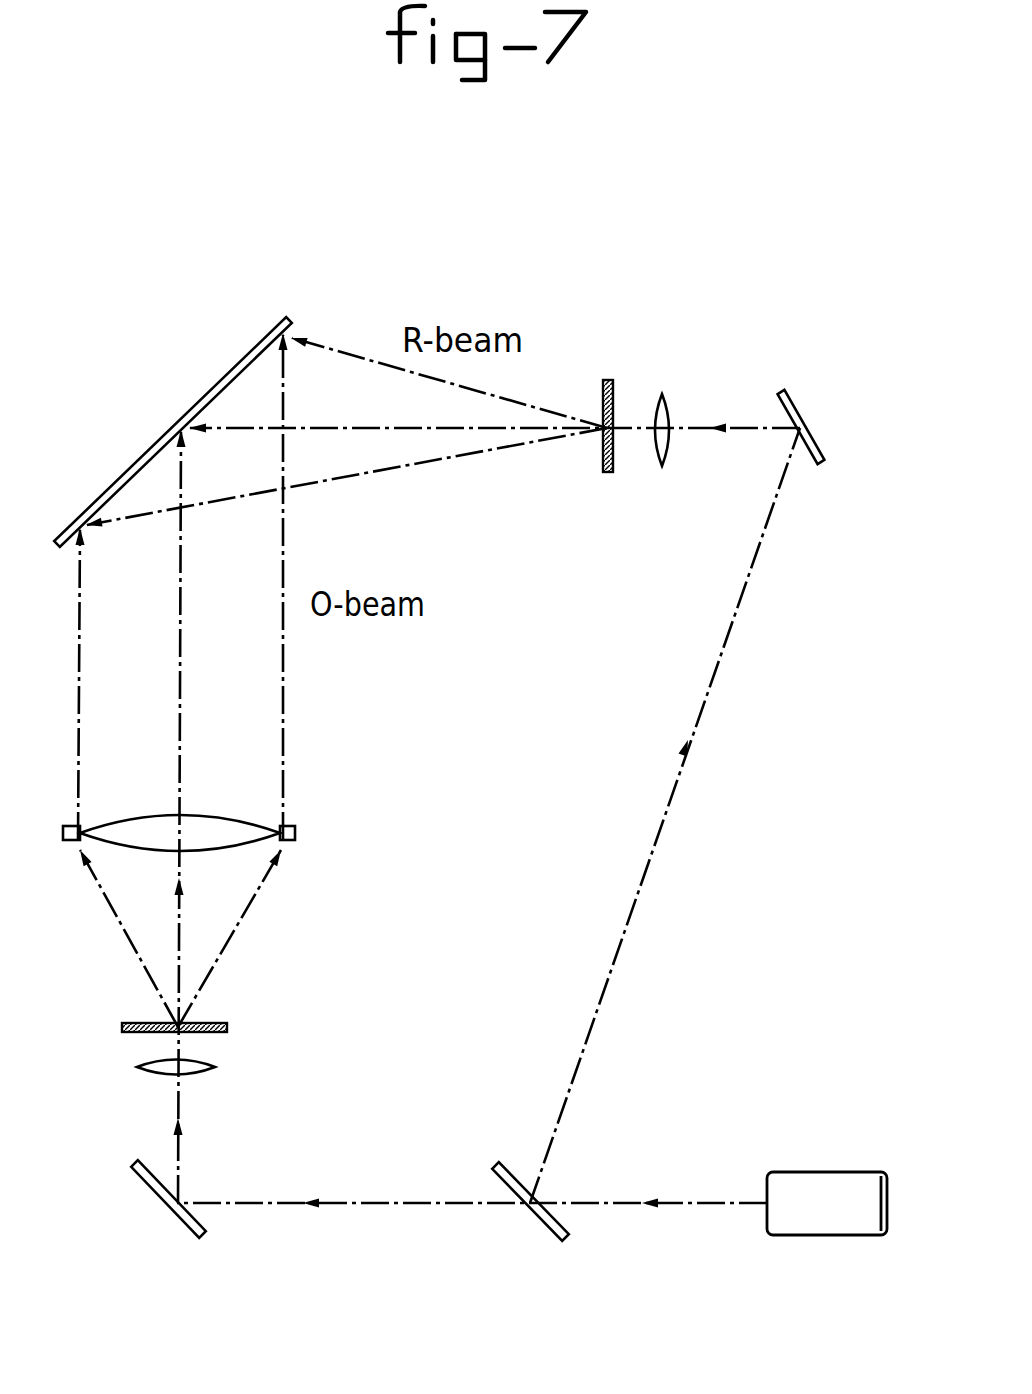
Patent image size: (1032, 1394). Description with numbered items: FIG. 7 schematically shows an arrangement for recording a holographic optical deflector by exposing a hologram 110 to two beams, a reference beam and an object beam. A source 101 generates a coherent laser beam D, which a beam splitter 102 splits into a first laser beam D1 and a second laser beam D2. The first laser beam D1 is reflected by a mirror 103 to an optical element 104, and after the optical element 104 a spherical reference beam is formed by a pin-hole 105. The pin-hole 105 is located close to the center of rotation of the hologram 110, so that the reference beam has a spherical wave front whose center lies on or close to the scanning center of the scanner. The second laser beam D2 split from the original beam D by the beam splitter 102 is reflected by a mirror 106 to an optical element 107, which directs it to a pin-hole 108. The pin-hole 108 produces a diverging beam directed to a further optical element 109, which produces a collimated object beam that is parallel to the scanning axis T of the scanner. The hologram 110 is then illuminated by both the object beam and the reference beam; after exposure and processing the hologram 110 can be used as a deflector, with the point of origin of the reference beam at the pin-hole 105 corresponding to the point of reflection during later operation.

The source 101 is at (815, 1187).
The beam splitter 102 is at (552, 1228).
The mirror 103 is at (793, 425).
The optical element 104 is at (670, 415).
The pin-hole 105 is at (615, 392).
The mirror 106 is at (197, 1220).
The optical element 107 is at (193, 1068).
The pin-hole 108 is at (207, 1023).
The further optical element 109 is at (260, 830).
The hologram 110 is at (210, 397).
The coherent laser beam D is at (669, 1179).
The first laser beam D1 is at (692, 770).
The second laser beam D2 is at (323, 1180).
The scanning axis T is at (180, 705).